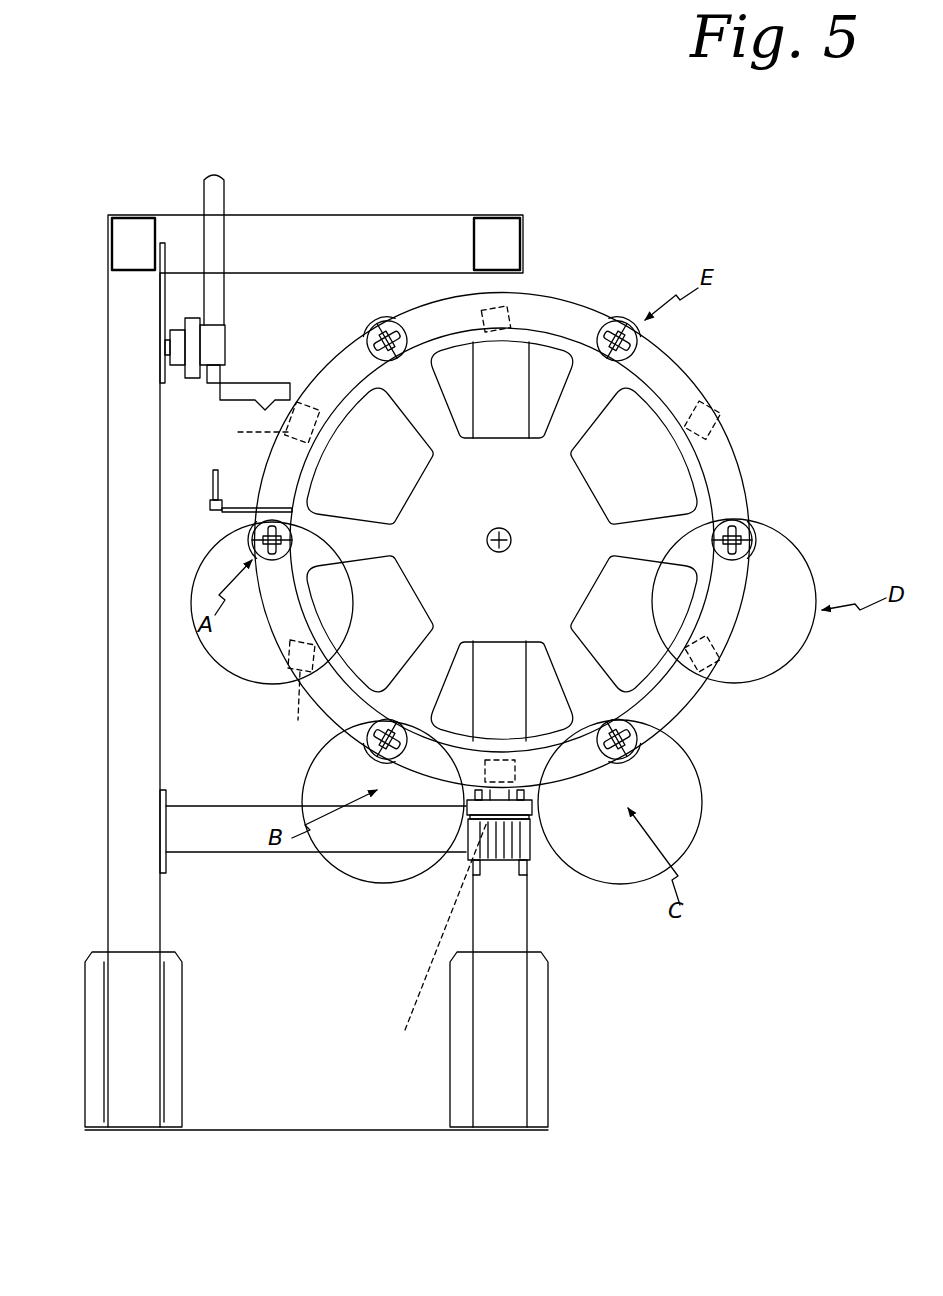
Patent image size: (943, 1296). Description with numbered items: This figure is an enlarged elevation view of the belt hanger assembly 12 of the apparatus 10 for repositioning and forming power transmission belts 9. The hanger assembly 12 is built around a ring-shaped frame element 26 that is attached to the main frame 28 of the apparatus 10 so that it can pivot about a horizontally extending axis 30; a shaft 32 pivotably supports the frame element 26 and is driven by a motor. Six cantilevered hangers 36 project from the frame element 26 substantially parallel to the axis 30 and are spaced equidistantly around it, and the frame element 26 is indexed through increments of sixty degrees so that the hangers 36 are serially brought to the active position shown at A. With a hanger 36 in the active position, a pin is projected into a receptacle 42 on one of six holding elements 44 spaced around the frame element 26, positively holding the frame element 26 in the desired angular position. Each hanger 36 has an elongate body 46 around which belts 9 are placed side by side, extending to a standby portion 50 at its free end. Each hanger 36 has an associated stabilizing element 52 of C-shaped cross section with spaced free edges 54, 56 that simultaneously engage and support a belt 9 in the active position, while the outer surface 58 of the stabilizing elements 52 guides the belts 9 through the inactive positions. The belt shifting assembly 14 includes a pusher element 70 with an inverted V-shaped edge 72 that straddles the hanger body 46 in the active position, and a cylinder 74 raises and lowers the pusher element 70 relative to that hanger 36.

The power transmission belt 9 is at (240, 672).
The apparatus 10 is at (690, 248).
The belt hanger assembly 12 is at (745, 452).
The belt shifting assembly 14 is at (238, 320).
The ring-shaped frame element 26 is at (660, 710).
The main frame 28 is at (514, 417).
The horizontally extending axis 30 is at (492, 530).
The shaft 32 is at (505, 553).
The cantilevered hanger 36 is at (393, 340).
The receptacle 42 is at (510, 320).
The holding element 44 is at (468, 352).
The elongate body 46 is at (402, 345).
The standby portion 50 is at (384, 333).
The stabilizing element 52 is at (355, 365).
The free edge 54 is at (296, 548).
The free edge 56 is at (265, 541).
The outer surface 58 is at (370, 338).
The pusher element 70 is at (268, 395).
The inverted V-shaped edge 72 is at (258, 390).
The cylinder 74 is at (216, 203).